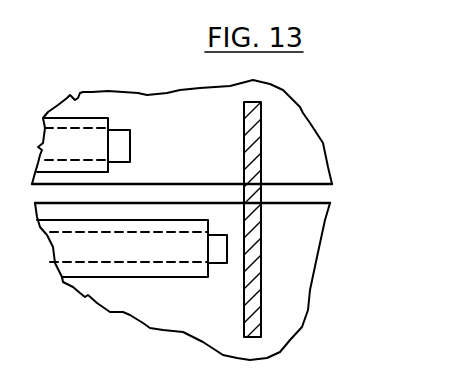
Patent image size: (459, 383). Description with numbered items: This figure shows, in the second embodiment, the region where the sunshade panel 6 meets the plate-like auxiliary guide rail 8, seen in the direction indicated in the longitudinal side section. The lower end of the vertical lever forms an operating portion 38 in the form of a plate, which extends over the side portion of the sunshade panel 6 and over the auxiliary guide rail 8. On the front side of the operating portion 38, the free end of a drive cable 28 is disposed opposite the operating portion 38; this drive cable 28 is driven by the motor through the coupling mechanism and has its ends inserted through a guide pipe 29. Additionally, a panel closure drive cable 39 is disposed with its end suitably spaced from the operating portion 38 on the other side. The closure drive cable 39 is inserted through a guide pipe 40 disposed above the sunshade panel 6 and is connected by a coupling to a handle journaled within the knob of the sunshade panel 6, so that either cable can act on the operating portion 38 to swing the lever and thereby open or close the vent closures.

The auxiliary guide rail 8 is at (307, 148).
The sunshade panel 6 is at (138, 300).
The operating portion 38 is at (250, 298).
The guide pipe 29 is at (77, 138).
The drive cable 28 is at (122, 143).
The guide pipe 40 is at (86, 255).
The panel closure drive cable 39 is at (218, 257).